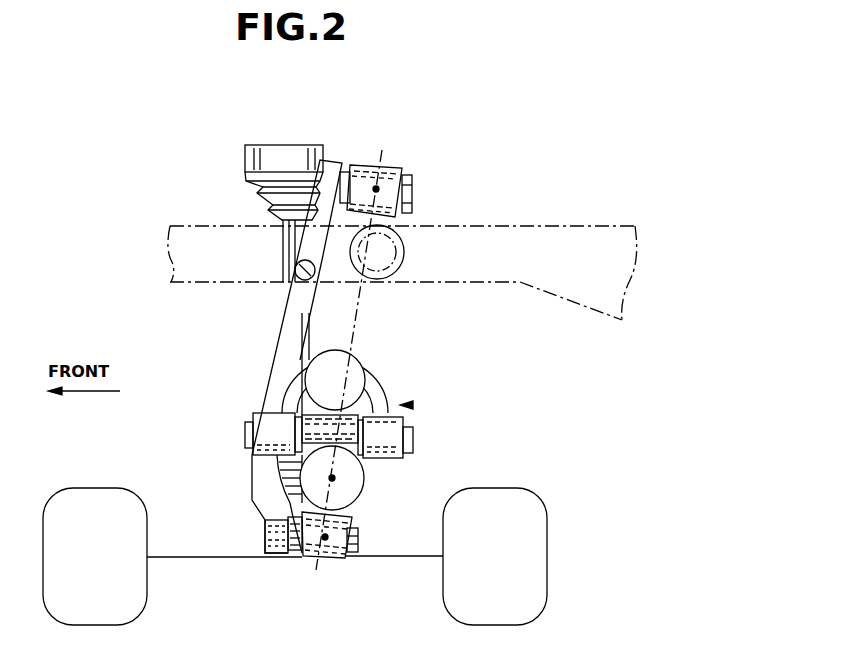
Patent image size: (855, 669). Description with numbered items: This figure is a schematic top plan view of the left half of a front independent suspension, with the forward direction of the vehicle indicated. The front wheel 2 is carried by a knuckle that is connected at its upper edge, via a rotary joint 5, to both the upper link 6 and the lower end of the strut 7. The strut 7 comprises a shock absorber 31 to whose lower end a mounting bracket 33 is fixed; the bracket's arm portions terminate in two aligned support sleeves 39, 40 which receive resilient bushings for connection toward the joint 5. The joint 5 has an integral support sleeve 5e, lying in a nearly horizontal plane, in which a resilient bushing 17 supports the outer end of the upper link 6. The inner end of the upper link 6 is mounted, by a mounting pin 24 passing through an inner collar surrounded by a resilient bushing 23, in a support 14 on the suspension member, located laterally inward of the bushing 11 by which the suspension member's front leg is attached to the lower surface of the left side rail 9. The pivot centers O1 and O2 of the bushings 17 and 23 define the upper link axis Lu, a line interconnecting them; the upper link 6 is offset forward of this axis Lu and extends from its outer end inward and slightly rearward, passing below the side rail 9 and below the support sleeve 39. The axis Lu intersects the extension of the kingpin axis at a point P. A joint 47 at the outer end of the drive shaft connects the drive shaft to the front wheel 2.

The front wheel 2 is at (530, 520).
The rotary joint 5 is at (353, 497).
The support sleeve 5e is at (355, 540).
The upper link 6 is at (273, 350).
The strut 7 is at (358, 383).
The left side rail 9 is at (514, 232).
The bushing 11 is at (400, 237).
The support 14 is at (357, 166).
The resilient bushing 17 is at (308, 550).
The resilient bushing 23 is at (402, 168).
The mounting pin 24 is at (412, 195).
The shock absorber 31 is at (380, 362).
The mounting bracket 33 is at (412, 405).
The support sleeve 39 is at (250, 430).
The support sleeve 40 is at (412, 440).
The joint 47 is at (277, 473).
The intersection point P is at (336, 478).
The pivot center O1 is at (326, 540).
The pivot center O2 is at (378, 186).
The upper link axis Lu is at (362, 302).